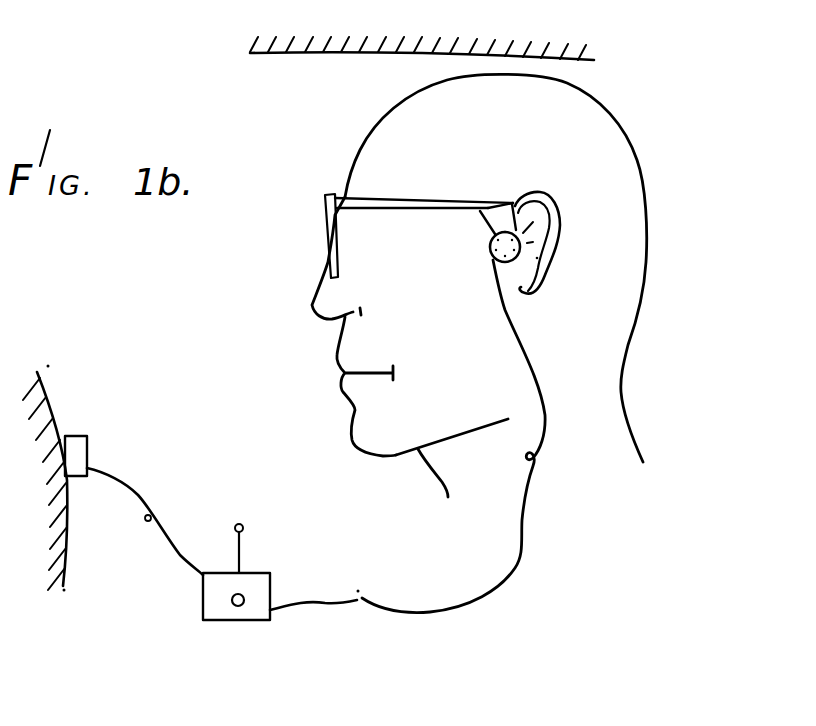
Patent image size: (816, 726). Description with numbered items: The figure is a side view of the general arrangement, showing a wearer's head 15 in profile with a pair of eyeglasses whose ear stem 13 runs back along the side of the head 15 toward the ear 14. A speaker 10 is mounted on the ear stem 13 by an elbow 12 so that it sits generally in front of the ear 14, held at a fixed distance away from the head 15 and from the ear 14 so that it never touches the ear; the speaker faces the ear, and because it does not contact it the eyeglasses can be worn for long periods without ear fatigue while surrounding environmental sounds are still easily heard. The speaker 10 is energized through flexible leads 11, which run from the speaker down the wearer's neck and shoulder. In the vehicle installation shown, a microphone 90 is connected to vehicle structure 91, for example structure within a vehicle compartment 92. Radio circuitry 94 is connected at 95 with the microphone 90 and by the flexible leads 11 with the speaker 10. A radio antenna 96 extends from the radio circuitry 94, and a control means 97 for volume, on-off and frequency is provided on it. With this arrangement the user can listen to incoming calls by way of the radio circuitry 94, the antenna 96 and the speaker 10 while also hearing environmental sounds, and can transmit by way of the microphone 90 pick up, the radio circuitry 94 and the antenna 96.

The speaker 10 is at (497, 258).
The flexible leads 11 is at (520, 549).
The elbow 12 is at (490, 223).
The ear stem 13 is at (426, 198).
The ear 14 is at (564, 222).
The head 15 is at (588, 132).
The microphone 90 is at (88, 442).
The vehicle structure 91 is at (67, 542).
The vehicle compartment 92 is at (315, 58).
The radio circuitry 94 is at (250, 621).
The connection 95 is at (135, 488).
The radio antenna 96 is at (245, 539).
The control means 97 is at (232, 600).